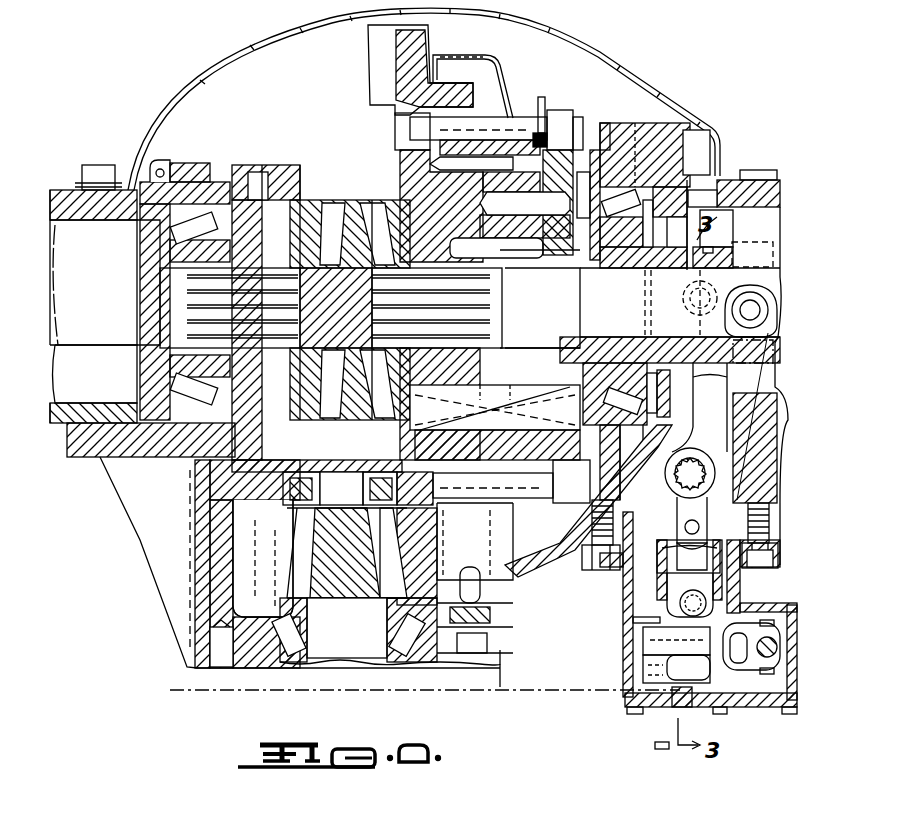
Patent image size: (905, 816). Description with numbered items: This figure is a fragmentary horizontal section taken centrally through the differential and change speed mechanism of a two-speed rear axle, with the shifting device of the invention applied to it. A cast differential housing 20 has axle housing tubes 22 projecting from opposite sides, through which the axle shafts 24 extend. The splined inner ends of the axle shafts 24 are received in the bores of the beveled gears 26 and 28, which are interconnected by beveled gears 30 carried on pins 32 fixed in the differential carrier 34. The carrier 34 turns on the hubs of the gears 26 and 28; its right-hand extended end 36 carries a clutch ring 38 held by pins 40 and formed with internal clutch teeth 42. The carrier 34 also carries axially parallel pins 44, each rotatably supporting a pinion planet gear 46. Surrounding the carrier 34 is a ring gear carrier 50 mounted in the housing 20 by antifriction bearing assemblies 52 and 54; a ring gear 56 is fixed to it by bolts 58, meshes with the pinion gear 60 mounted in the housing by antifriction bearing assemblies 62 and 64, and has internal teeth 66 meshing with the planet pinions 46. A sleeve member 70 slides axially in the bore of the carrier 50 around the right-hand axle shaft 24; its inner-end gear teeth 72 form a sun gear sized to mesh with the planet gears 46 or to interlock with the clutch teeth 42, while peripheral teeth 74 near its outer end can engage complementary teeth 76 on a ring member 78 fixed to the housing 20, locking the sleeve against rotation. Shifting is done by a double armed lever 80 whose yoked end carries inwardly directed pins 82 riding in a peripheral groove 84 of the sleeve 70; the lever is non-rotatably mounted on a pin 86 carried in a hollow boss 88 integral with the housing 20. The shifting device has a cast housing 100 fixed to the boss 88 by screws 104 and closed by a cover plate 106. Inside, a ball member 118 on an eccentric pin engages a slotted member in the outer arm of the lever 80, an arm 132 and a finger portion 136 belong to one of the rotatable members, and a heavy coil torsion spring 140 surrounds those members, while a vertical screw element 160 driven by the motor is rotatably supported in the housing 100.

The differential housing 20 is at (188, 580).
The axle housing tubes 22 is at (780, 176).
The axle shafts 24 is at (112, 325).
The beveled gear 26 is at (278, 190).
The beveled gear 28 is at (566, 300).
The beveled gears 30 is at (318, 200).
The pins 32 is at (330, 200).
The differential carrier 34 is at (275, 165).
The extended end 36 is at (543, 113).
The clutch ring 38 is at (604, 124).
The pins 40 is at (528, 213).
The internal clutch teeth 42 is at (647, 302).
The pins 44 is at (486, 416).
The pinion planet gears 46 is at (512, 393).
The ring gear carrier 50 is at (402, 150).
The antifriction bearing assembly 52 is at (178, 238).
The antifriction bearing assembly 54 is at (630, 150).
The ring gear 56 is at (372, 45).
The bolts 58 is at (535, 150).
The pinion gear 60 is at (293, 545).
The antifriction bearing assembly 62 is at (280, 658).
The antifriction bearing assembly 64 is at (292, 505).
The teeth 66 is at (497, 130).
The sleeve member 70 is at (684, 297).
The gear teeth 72 is at (540, 299).
The teeth 74 is at (717, 228).
The teeth 76 is at (716, 217).
The ring member 78 is at (702, 198).
The double armed lever 80 is at (660, 476).
The pins 82 is at (732, 295).
The peripheral groove 84 is at (752, 246).
The pin 86 is at (710, 463).
The hollow boss 88 is at (757, 443).
The housing 100 is at (626, 612).
The screws 104 is at (597, 572).
The cover plate 106 is at (648, 705).
The ball member 118 is at (700, 600).
The arm 132 is at (748, 672).
The finger portion 136 is at (648, 660).
The coil torsion spring 140 is at (648, 630).
The screw element 160 is at (786, 615).